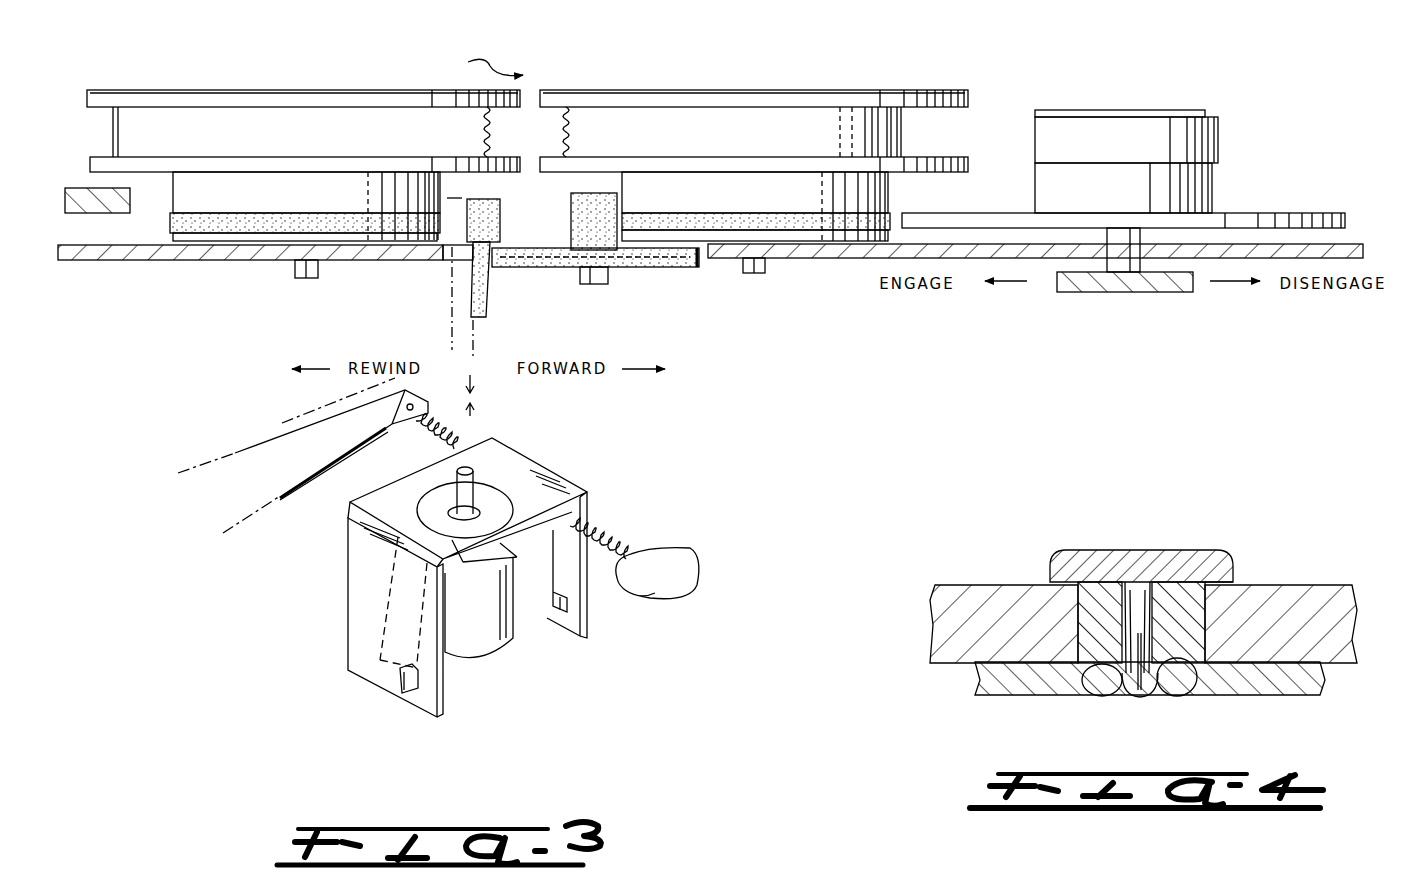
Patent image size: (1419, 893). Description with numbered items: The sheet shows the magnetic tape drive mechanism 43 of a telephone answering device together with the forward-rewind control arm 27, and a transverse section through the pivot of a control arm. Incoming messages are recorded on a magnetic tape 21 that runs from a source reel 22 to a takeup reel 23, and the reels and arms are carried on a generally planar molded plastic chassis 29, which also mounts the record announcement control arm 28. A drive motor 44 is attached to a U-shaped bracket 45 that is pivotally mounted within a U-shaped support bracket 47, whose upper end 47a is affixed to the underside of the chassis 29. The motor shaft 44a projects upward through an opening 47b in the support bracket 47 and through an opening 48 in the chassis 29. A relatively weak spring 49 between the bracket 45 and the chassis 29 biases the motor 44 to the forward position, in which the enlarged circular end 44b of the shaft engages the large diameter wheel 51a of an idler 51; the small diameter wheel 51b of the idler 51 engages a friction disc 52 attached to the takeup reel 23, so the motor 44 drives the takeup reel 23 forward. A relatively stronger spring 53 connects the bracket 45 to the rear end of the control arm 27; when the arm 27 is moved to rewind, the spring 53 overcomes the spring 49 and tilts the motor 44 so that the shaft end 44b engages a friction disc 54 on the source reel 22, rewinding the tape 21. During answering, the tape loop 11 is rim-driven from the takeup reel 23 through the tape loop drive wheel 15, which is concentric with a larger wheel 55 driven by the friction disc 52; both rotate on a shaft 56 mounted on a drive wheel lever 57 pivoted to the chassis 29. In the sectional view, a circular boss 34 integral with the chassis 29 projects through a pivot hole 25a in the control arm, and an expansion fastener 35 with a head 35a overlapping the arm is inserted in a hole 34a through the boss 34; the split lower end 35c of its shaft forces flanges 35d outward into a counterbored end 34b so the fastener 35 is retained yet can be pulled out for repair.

In FIG. 3, the tape loop 11 is at (1222, 142).
In FIG. 3, the tape loop drive wheel 15 is at (1207, 180).
In FIG. 3, the magnetic tape 21 is at (173, 132).
In FIG. 3, the source reel 22 is at (313, 100).
In FIG. 3, the takeup reel 23 is at (668, 96).
In FIG. 4, the pivot hole 25a is at (1097, 623).
In FIG. 3, the forward-rewind control arm 27 is at (306, 410).
In FIG. 3, the record announcement control arm 28 is at (112, 216).
In FIG. 3, the chassis 29 is at (800, 260).
In FIG. 4, the chassis 29 is at (1250, 690).
In FIG. 4, the circular boss 34 is at (1205, 617).
In FIG. 4, the hole 34a is at (1137, 593).
In FIG. 4, the counterbored end 34b is at (1113, 697).
In FIG. 4, the expansion fastener 35 is at (1132, 546).
In FIG. 4, the head 35a is at (1197, 562).
In FIG. 4, the lower end of fastener shaft 35c is at (1183, 697).
In FIG. 4, the flanges 35d is at (1063, 697).
In FIG. 3, the drive mechanism 43 is at (469, 63).
In FIG. 3, the drive motor 44 is at (488, 642).
In FIG. 3, the motor shaft 44a is at (485, 290).
In FIG. 3, the enlarged circular end of motor shaft 44b is at (497, 205).
In FIG. 3, the U-shaped bracket 45 is at (543, 607).
In FIG. 3, the U-shaped support bracket 47 is at (350, 592).
In FIG. 3, the upper end of support bracket 47a is at (547, 483).
In FIG. 3, the opening in support bracket 47b is at (478, 482).
In FIG. 3, the opening in chassis 48 is at (412, 262).
In FIG. 3, the spring 49 is at (607, 530).
In FIG. 3, the idler 51 is at (658, 266).
In FIG. 3, the large diameter wheel 51a is at (703, 262).
In FIG. 3, the small diameter wheel 51b is at (588, 233).
In FIG. 3, the friction disc 52 is at (890, 224).
In FIG. 3, the spring 53 is at (428, 437).
In FIG. 3, the friction disc 54 is at (230, 235).
In FIG. 3, the wheel 55 is at (1272, 219).
In FIG. 3, the shaft 56 is at (1135, 262).
In FIG. 3, the drive wheel lever 57 is at (1118, 293).